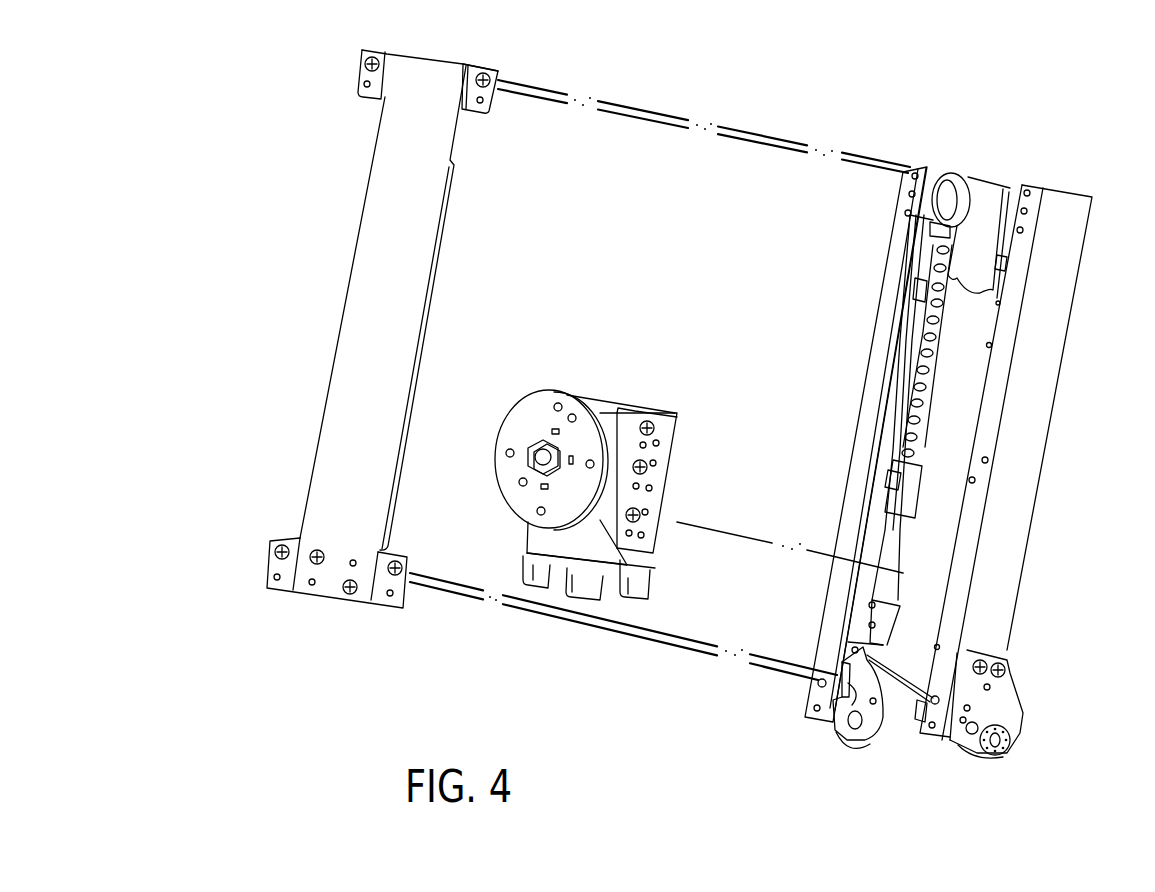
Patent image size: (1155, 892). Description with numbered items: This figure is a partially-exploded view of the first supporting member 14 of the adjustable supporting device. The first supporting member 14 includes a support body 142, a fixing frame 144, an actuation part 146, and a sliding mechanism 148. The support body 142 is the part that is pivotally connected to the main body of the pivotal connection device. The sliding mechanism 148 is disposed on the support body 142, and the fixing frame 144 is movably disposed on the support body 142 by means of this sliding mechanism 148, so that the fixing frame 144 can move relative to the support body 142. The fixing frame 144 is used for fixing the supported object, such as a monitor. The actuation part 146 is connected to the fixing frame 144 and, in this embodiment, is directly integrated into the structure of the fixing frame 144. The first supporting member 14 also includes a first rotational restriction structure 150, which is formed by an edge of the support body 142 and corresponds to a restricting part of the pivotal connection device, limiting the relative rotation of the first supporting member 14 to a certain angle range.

The first supporting member 14 is at (1062, 126).
The support body 142 is at (1035, 407).
The fixing frame 144 is at (607, 399).
The actuation part 146 is at (648, 584).
The sliding mechanism 148 is at (913, 492).
The first rotational restriction structure 150 is at (855, 750).